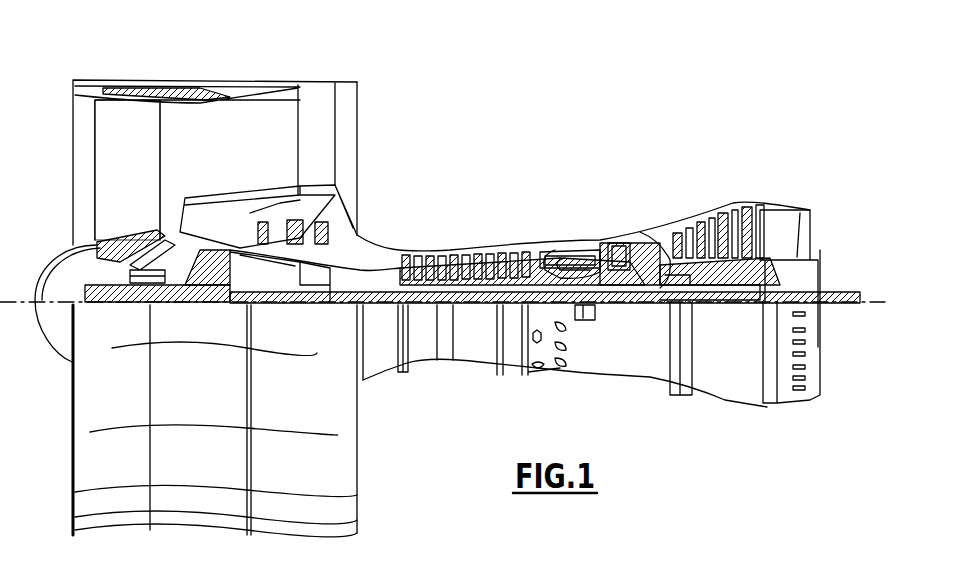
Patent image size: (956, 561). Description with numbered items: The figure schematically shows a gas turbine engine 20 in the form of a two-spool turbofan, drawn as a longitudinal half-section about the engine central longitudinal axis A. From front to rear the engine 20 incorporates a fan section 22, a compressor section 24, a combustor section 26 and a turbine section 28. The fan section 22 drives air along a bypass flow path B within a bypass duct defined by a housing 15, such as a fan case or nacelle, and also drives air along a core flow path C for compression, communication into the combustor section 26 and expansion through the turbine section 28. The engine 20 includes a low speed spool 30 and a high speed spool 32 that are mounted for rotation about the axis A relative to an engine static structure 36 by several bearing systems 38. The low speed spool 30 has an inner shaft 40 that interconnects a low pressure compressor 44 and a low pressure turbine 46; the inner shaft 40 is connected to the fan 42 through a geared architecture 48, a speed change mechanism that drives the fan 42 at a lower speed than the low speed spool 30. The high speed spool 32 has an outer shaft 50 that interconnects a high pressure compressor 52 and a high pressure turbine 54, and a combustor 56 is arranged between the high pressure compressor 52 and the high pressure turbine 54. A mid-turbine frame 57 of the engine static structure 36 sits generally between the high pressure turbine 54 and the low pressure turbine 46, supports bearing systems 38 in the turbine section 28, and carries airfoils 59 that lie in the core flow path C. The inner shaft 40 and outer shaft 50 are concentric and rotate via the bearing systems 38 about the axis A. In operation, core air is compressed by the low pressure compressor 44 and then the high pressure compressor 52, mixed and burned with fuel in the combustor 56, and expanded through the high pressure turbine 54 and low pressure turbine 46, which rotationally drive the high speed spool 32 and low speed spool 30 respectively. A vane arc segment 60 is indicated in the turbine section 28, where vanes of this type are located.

The housing 15 is at (218, 86).
The gas turbine engine 20 is at (578, 118).
The fan section 22 is at (157, 72).
The compressor section 24 is at (400, 222).
The combustor section 26 is at (571, 214).
The turbine section 28 is at (700, 176).
The low speed spool 30 is at (480, 312).
The high speed spool 32 is at (512, 250).
The engine static structure 36 is at (512, 378).
The bearing systems 38 is at (325, 305).
The inner shaft 40 is at (380, 364).
The fan 42 is at (145, 185).
The low pressure compressor 44 is at (308, 225).
The low pressure turbine 46 is at (722, 212).
The geared architecture 48 is at (220, 292).
The outer shaft 50 is at (583, 306).
The high pressure compressor 52 is at (463, 253).
The high pressure turbine 54 is at (622, 242).
The combustor 56 is at (567, 250).
The mid-turbine frame 57 is at (660, 226).
The airfoils 59 is at (680, 276).
The vane arc segment 60 is at (648, 246).
The engine central longitudinal axis A is at (884, 302).
The bypass flow path B is at (188, 143).
The core flow path C is at (215, 223).